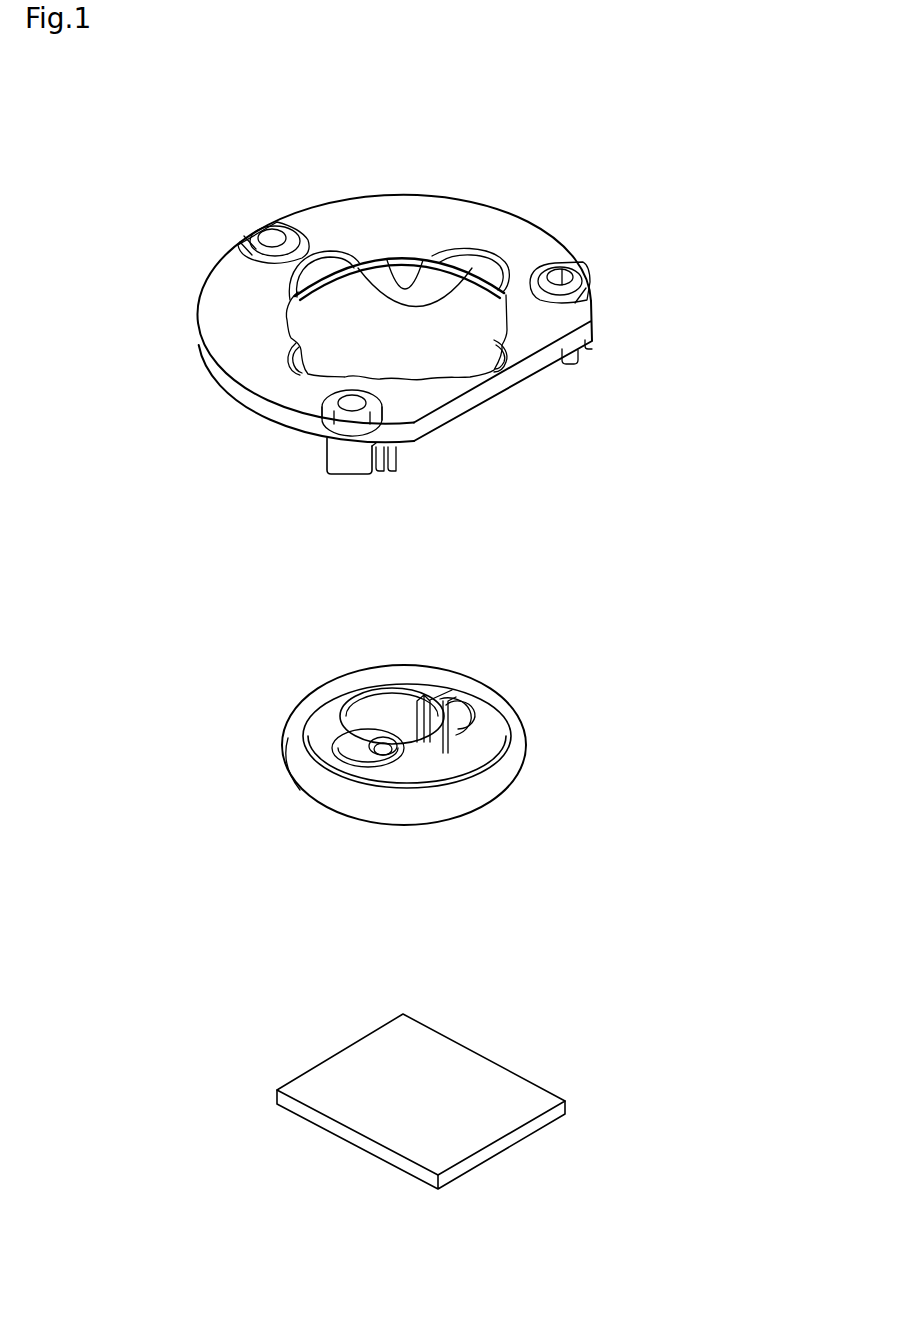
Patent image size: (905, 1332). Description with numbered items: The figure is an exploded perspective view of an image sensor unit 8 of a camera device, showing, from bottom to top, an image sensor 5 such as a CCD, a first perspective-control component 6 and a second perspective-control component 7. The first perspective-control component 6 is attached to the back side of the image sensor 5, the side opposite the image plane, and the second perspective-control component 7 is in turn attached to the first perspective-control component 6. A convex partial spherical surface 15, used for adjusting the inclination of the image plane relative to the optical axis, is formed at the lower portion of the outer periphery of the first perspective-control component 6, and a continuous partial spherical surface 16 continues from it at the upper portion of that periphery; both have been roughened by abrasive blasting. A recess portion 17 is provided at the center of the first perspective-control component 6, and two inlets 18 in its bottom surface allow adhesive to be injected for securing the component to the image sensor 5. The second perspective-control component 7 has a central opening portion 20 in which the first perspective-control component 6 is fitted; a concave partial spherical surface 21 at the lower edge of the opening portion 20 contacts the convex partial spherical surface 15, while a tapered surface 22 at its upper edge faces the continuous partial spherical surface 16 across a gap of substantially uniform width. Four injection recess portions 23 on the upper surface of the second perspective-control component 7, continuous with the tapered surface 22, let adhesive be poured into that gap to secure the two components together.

The image sensor 5 is at (264, 1090).
The first perspective-control component 6 is at (397, 704).
The second perspective-control component 7 is at (198, 297).
The image sensor unit 8 is at (425, 286).
The convex partial spherical surface 15 is at (520, 748).
The continuous partial spherical surface 16 is at (510, 727).
The recess portion 17 is at (365, 712).
The inlets 18 is at (383, 742).
The opening portion 20 is at (347, 350).
The concave partial spherical surface 21 is at (465, 268).
The tapered surface 22 is at (425, 262).
The injection recess portion 23 is at (322, 262).